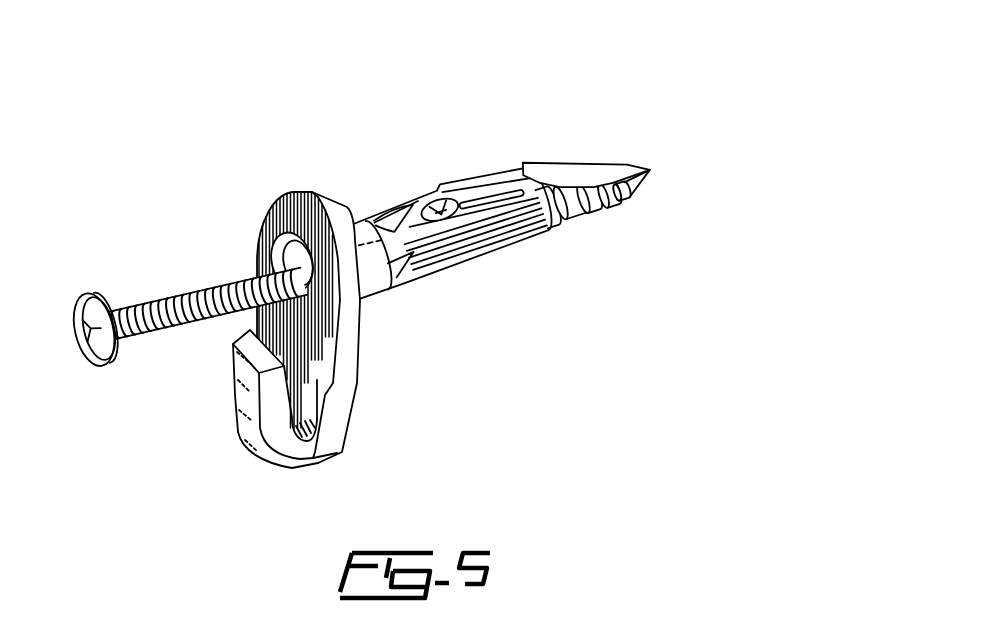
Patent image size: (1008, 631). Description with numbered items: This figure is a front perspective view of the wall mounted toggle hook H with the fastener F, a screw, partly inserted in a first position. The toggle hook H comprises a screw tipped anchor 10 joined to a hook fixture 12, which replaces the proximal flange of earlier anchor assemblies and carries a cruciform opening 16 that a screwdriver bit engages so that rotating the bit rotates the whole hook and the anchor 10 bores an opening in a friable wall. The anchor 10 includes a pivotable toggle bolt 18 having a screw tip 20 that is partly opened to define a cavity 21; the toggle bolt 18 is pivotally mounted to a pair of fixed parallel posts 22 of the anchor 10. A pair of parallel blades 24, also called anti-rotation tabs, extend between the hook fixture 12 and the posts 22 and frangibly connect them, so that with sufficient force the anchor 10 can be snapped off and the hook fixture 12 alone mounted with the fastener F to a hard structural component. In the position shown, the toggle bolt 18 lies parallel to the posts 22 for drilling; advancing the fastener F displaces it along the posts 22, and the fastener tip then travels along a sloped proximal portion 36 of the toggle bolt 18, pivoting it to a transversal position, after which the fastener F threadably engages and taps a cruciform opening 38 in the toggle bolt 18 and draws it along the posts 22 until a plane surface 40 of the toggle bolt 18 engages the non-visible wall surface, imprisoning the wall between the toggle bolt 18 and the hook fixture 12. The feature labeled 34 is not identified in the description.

The screw tipped anchor 10 is at (482, 238).
The hook fixture 12 is at (252, 453).
The cruciform opening 16 is at (293, 247).
The pivotable toggle bolt 18 is at (602, 160).
The screw tip 20 is at (603, 205).
The cavity 21 is at (565, 172).
The fixed parallel posts 22 is at (530, 232).
The parallel blades 24 is at (378, 270).
The collar 34 is at (358, 232).
The sloped proximal portion 36 is at (399, 222).
The cruciform opening 38 is at (470, 228).
The plane surface 40 is at (470, 187).
The fastener F is at (88, 283).
The wall mounted toggle hook H is at (386, 158).